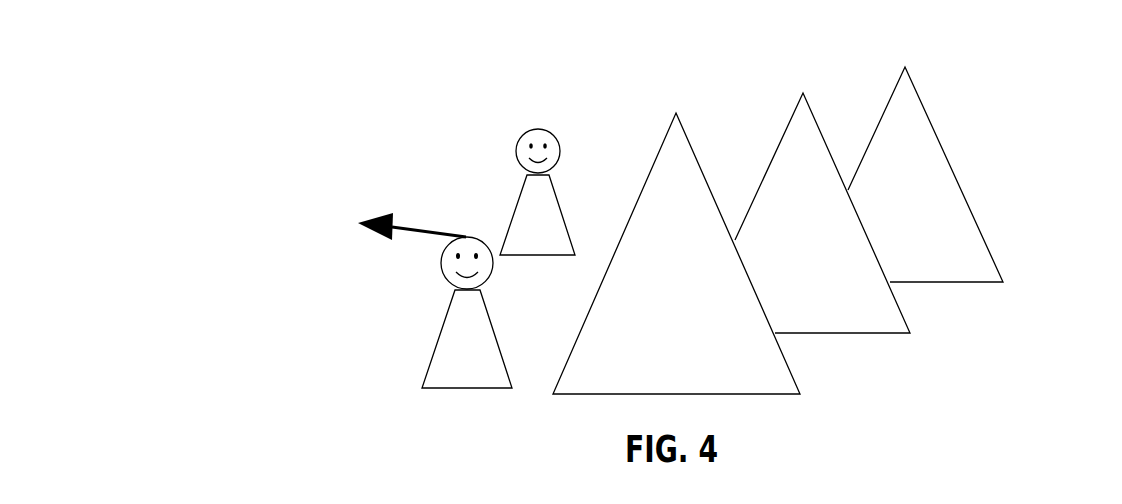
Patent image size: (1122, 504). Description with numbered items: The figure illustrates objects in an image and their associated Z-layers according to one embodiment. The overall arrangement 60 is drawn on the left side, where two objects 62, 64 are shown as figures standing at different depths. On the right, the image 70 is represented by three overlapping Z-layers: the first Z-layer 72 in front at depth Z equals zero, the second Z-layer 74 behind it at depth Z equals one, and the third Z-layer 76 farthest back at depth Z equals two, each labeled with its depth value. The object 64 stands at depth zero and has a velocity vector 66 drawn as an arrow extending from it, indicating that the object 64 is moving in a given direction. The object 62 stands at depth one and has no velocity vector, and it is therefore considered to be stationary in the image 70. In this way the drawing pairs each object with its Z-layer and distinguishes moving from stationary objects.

The virtual environment with users 60 is at (318, 86).
The object 62 is at (522, 193).
The object 64 is at (447, 313).
The velocity vector 66 is at (358, 222).
The image 70 is at (1010, 42).
The Z-layer Z=0 72 is at (690, 155).
The Z-layer Z=1 74 is at (800, 105).
The Z-layer Z=2 76 is at (925, 123).